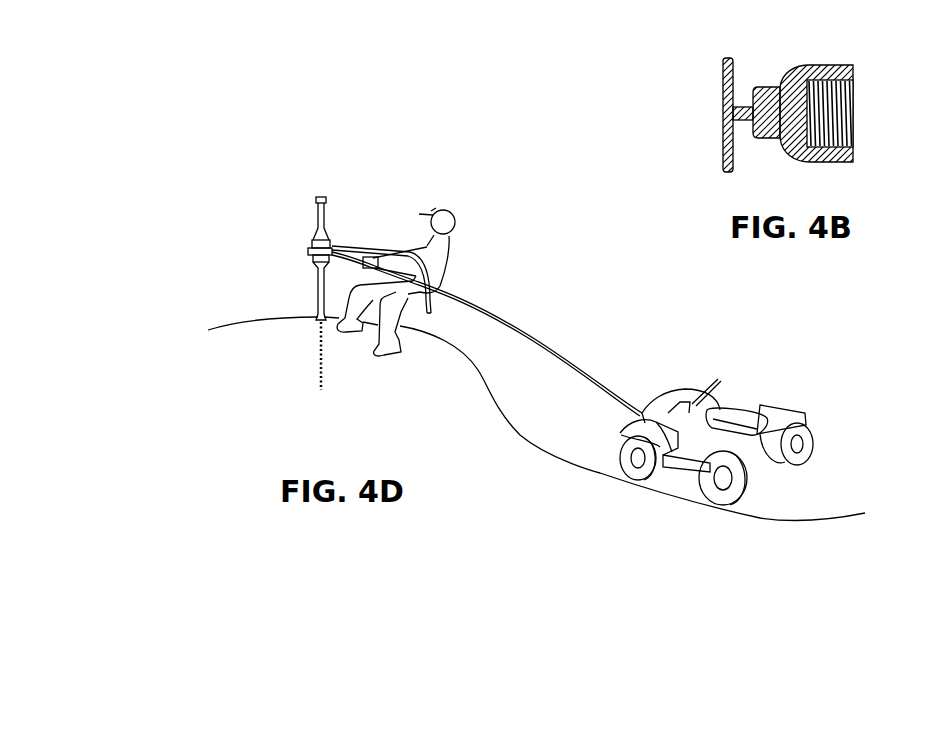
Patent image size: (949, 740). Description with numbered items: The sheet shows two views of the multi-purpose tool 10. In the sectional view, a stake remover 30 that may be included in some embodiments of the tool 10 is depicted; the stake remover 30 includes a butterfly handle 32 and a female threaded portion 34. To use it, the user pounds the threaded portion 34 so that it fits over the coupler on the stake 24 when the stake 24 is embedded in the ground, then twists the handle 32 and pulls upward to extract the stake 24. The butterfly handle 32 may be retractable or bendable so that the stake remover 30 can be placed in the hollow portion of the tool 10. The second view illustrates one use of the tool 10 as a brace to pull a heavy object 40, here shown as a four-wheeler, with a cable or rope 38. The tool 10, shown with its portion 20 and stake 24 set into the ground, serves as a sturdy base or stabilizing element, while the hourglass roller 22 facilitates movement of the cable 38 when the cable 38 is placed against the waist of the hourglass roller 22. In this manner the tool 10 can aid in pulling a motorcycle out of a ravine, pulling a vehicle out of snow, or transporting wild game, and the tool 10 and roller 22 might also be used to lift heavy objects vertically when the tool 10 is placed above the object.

In FIG. 4D, the multi-purpose tool 10 is at (323, 289).
In FIG. 4D, the anchor post 20 is at (336, 243).
In FIG. 4D, the hourglass roller 22 is at (308, 249).
In FIG. 4D, the stake 24 is at (318, 362).
In FIG. 4B, the stake remover 30 is at (779, 86).
In FIG. 4B, the butterfly handle 32 is at (722, 152).
In FIG. 4B, the female threaded portion 34 is at (851, 105).
In FIG. 4D, the cable or rope 38 is at (525, 332).
In FIG. 4D, the heavy object 40 is at (681, 392).